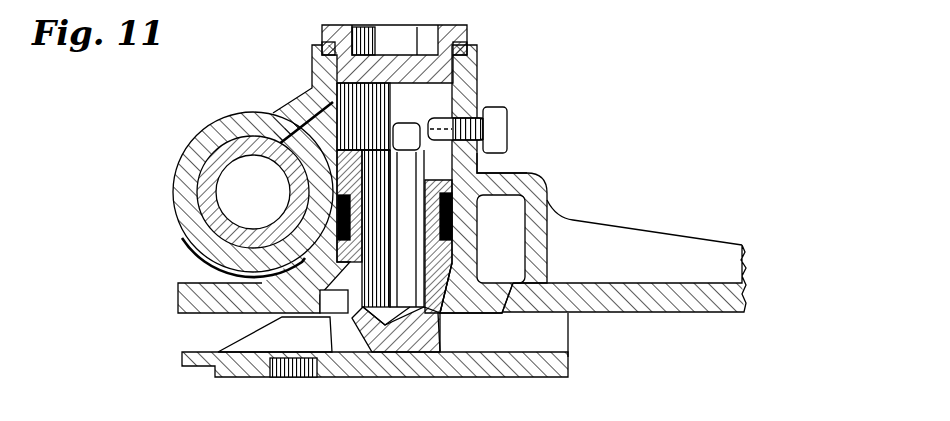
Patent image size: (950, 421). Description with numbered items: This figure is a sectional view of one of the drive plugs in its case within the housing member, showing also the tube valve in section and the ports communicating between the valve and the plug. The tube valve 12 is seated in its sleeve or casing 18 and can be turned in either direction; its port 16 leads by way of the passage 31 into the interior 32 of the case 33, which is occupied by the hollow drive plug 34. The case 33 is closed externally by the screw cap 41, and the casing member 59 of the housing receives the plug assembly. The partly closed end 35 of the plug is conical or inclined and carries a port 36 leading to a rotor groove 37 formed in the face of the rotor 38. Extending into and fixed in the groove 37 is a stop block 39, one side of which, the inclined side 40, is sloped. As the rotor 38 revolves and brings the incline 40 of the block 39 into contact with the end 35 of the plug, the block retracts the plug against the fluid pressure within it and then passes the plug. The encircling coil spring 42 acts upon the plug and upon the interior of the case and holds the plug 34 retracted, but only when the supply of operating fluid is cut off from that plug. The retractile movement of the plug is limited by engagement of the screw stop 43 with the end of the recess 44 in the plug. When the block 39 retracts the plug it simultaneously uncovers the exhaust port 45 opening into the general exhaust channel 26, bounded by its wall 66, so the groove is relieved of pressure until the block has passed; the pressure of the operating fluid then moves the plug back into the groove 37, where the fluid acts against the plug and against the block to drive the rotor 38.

The tube valve 12 is at (200, 190).
The port 16 is at (290, 164).
The casing 18 is at (229, 112).
The general exhaust channel 26 is at (501, 239).
The passage 31 is at (305, 104).
The interior 32 is at (350, 140).
The case 33 is at (478, 70).
The drive plug 34 is at (406, 138).
The partly closed end 35 is at (433, 340).
The port 36 is at (348, 280).
The rotor groove 37 is at (343, 345).
The rotor 38 is at (245, 376).
The stop block 39 is at (283, 360).
The inclined side 40 is at (250, 334).
The screw cap 41 is at (468, 32).
The coil spring 42 is at (438, 210).
The screw stop 43 is at (508, 128).
The recess 44 is at (480, 175).
The exhaust port 45 is at (495, 302).
The casing member 59 is at (687, 308).
The wall 66 is at (551, 202).